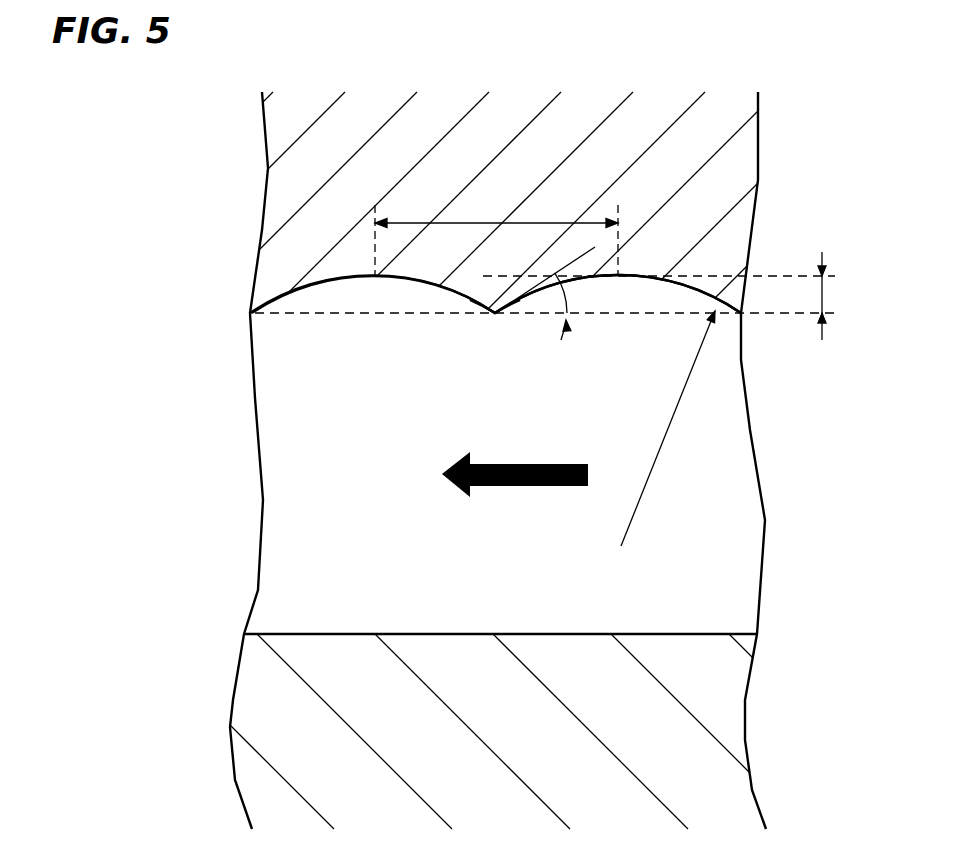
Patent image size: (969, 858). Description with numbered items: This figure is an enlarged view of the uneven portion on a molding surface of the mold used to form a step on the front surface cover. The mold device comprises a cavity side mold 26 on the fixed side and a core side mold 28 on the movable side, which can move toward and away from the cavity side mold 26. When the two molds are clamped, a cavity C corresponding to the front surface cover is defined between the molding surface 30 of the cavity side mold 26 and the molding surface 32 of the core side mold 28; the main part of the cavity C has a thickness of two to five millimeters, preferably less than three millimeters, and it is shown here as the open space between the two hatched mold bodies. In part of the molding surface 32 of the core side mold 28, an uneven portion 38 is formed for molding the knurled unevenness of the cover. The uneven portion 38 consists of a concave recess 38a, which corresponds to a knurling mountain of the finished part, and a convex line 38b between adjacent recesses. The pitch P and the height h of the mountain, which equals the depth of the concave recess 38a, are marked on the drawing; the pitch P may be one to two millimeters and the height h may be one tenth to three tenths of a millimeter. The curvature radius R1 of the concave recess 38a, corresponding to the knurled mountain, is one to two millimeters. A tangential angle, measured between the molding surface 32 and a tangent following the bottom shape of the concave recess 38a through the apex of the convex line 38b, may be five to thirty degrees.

The cavity side mold 26 is at (268, 688).
The core side mold 28 is at (292, 197).
The molding surface 30 is at (553, 634).
The molding surface 32 is at (313, 313).
The uneven portion 38 is at (459, 322).
The concave recess 38a is at (397, 292).
The convex line 38b is at (495, 323).
The cavity C is at (305, 530).
The pitch P is at (496, 237).
The height of the mountain h is at (830, 296).
The curvature radius R1 is at (660, 445).